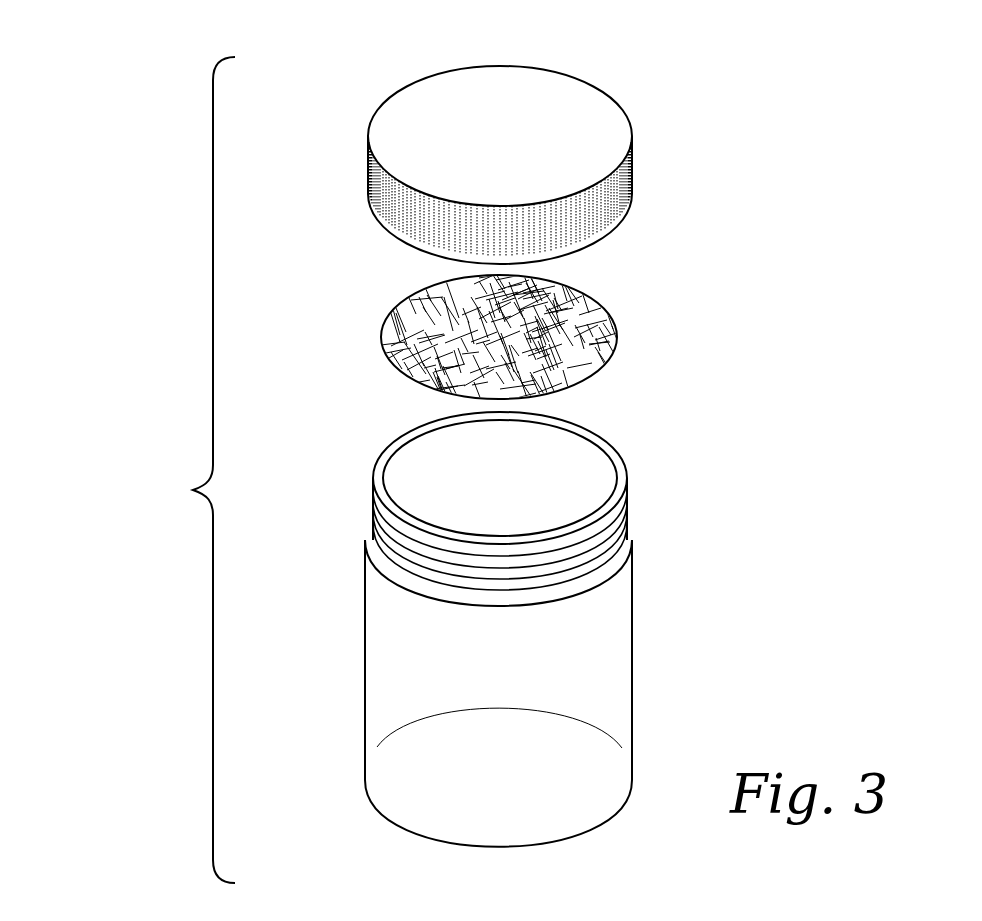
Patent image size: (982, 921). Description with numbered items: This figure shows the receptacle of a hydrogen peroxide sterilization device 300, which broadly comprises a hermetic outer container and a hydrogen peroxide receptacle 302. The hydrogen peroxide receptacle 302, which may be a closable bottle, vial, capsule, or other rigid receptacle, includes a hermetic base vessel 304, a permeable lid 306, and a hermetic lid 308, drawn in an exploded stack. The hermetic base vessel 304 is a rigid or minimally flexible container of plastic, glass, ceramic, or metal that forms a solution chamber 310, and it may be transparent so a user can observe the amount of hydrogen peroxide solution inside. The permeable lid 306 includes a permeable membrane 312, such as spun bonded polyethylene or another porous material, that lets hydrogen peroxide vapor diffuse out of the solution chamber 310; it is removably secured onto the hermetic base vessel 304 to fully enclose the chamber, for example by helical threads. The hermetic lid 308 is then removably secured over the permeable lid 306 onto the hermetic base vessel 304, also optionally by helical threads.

The hydrogen peroxide sterilization device 300 is at (108, 62).
The hydrogen peroxide receptacle 302 is at (457, 470).
The hermetic base vessel 304 is at (655, 648).
The permeable lid 306 is at (644, 343).
The hermetic lid 308 is at (634, 160).
The solution chamber 310 is at (563, 480).
The permeable membrane 312 is at (560, 310).